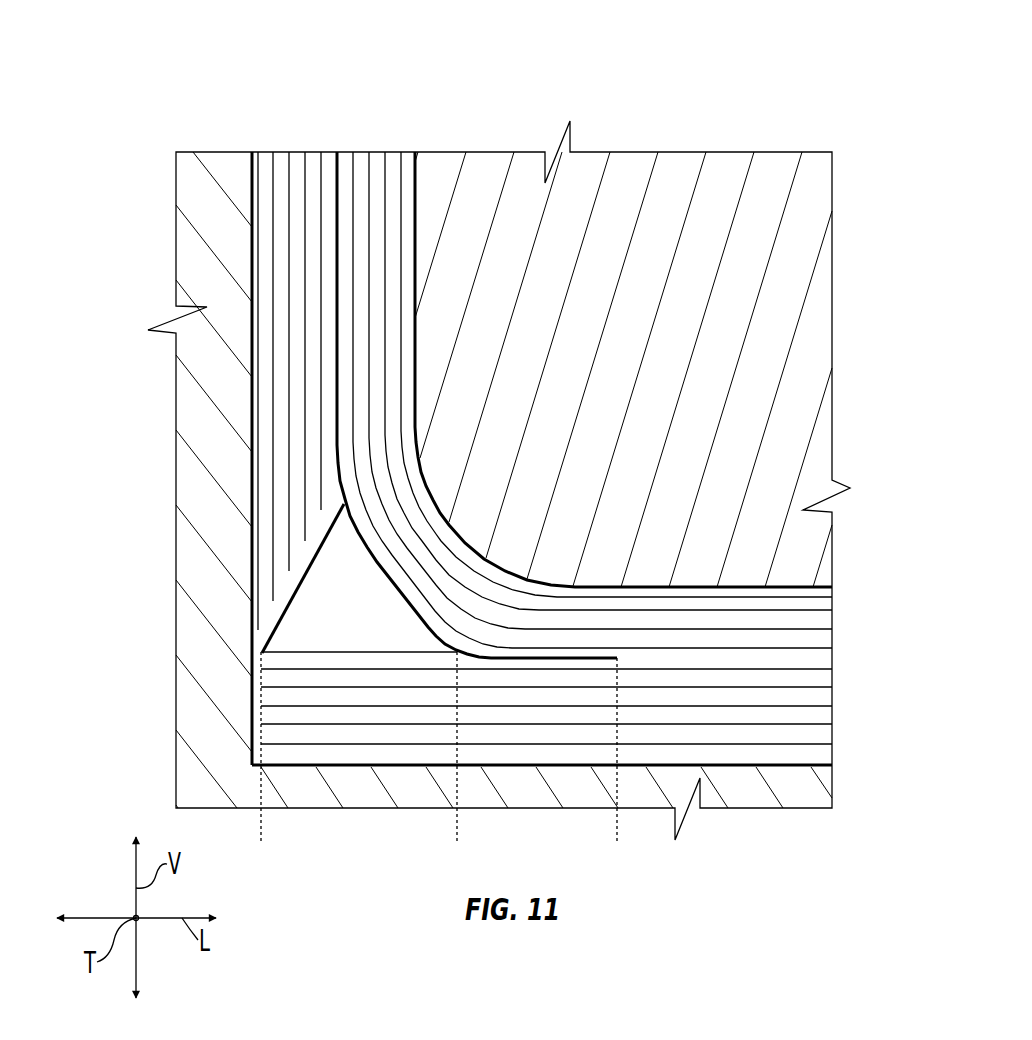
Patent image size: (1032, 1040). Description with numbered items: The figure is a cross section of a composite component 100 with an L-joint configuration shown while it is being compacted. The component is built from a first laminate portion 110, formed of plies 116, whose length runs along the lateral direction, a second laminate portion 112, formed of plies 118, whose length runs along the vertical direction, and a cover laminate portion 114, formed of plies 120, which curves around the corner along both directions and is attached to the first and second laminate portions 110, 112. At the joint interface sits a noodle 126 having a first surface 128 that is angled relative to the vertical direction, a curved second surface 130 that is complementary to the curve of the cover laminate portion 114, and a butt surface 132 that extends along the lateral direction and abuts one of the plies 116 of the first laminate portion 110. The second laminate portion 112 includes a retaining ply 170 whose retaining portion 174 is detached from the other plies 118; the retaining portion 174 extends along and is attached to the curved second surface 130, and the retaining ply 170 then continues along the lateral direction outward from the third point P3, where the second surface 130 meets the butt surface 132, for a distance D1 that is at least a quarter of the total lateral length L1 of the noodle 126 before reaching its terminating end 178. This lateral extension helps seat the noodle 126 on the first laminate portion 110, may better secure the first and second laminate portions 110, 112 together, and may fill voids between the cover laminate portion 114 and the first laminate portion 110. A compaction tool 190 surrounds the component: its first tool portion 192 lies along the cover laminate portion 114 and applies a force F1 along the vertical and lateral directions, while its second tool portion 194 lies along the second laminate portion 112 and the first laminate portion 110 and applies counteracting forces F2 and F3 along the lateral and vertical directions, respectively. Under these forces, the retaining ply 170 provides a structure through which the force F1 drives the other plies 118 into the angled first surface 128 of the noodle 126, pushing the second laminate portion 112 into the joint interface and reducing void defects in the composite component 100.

The composite component 100 is at (350, 64).
The first laminate portion 110 is at (838, 668).
The second laminate portion 112 is at (337, 148).
The cover laminate portion 114 is at (405, 148).
The plies 116 is at (803, 750).
The plies 118 is at (270, 323).
The plies 120 is at (700, 573).
The noodle 126 is at (308, 590).
The first surface 128 is at (308, 555).
The second surface 130 is at (349, 503).
The butt surface 132 is at (308, 661).
The retaining ply 170 is at (373, 549).
The retaining portion 174 is at (396, 566).
The terminating end 178 is at (617, 653).
The compaction tool 190 is at (678, 149).
The first tool portion 192 is at (608, 314).
The second tool portion 194 is at (226, 665).
The third point P3 is at (459, 648).
The force F1 is at (648, 333).
The counteracting force F2 is at (219, 370).
The counteracting force F3 is at (744, 770).
The total lateral length L1 is at (455, 833).
The distance D1 is at (615, 833).